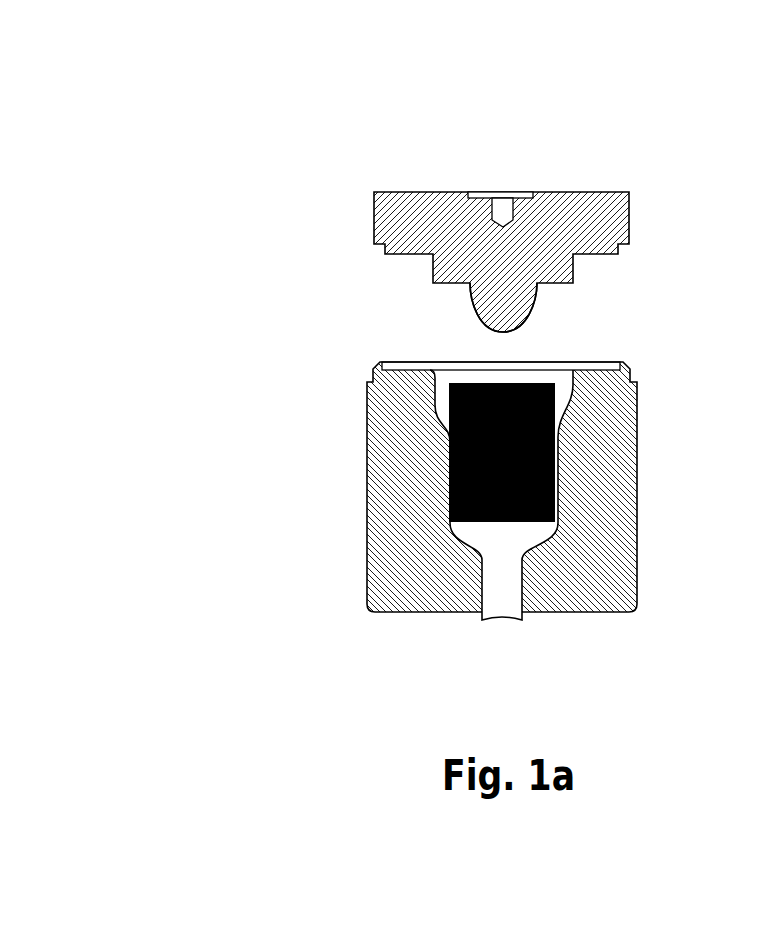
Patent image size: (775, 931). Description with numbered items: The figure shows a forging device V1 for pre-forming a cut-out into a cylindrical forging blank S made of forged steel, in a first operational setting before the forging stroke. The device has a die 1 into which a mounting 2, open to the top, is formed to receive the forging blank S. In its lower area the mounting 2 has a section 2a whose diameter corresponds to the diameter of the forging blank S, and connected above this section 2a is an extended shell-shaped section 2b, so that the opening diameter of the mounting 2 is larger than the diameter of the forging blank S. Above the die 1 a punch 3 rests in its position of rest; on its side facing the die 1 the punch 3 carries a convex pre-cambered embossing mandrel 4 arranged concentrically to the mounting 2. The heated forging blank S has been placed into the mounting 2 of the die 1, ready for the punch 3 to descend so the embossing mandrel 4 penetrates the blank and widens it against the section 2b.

The forging device V1 is at (320, 162).
The punch 3 is at (565, 218).
The embossing mandrel 4 is at (497, 313).
The die 1 is at (590, 568).
The mounting 2 is at (575, 427).
The section 2a is at (560, 495).
The extended shell-shaped section 2b is at (565, 400).
The forging blank S is at (494, 471).